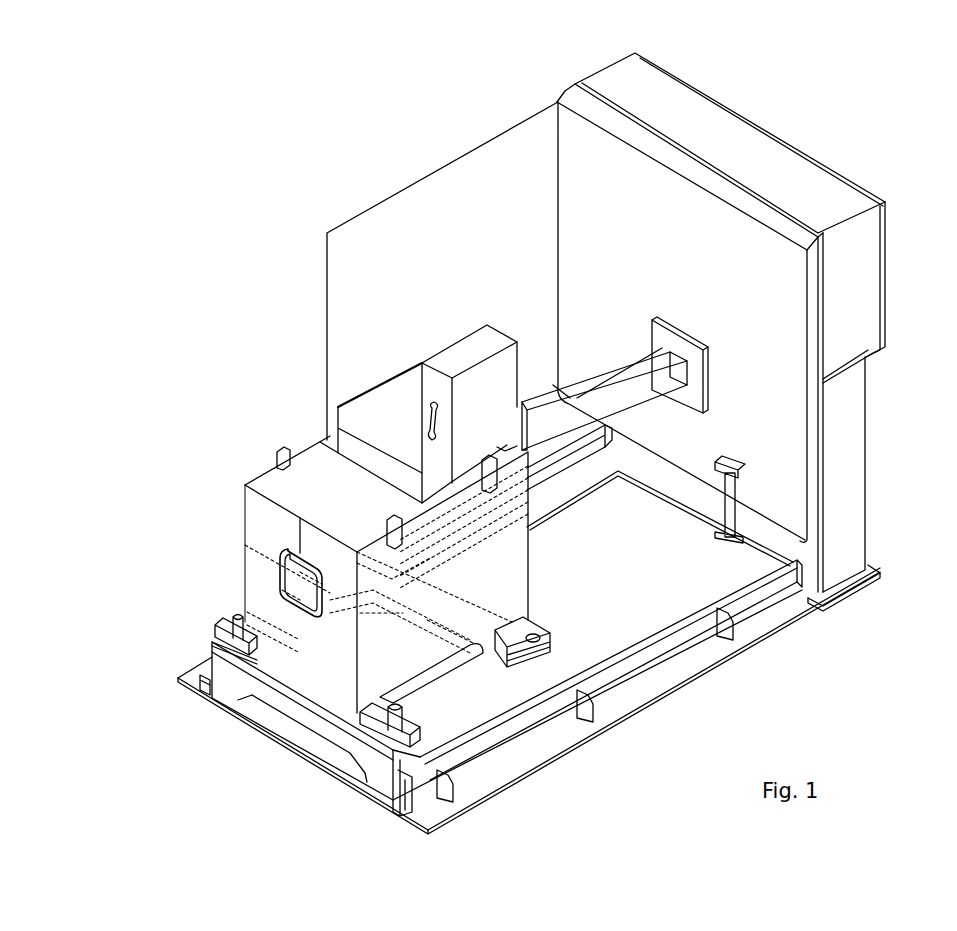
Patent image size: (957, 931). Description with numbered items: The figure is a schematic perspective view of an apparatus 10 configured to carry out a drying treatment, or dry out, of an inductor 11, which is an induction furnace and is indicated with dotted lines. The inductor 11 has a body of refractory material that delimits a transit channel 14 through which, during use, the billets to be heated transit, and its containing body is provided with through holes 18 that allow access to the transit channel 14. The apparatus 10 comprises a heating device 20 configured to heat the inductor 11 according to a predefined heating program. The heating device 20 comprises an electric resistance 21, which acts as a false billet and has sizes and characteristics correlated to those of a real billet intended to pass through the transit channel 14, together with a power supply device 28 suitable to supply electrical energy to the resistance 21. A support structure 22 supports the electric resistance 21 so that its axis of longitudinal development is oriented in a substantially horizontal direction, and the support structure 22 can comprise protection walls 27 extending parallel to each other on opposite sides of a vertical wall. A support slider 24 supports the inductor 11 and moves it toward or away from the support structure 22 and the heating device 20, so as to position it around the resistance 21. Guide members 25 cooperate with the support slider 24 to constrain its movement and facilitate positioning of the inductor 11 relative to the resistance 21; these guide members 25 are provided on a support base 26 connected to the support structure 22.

The apparatus 10 is at (888, 186).
The inductor 11 is at (242, 518).
The transit channel 14 is at (308, 601).
The through holes 18 is at (282, 563).
The heating device 20 is at (640, 362).
The electric resistance 21 is at (652, 396).
The support structure 22 is at (862, 413).
The support slider 24 is at (376, 770).
The guide members 25 is at (558, 492).
The support base 26 is at (656, 682).
The protection walls 27 is at (402, 211).
The power supply device 28 is at (780, 296).